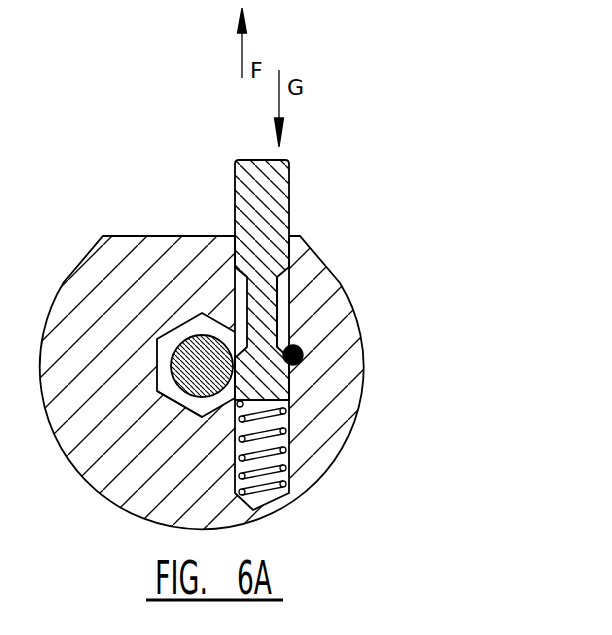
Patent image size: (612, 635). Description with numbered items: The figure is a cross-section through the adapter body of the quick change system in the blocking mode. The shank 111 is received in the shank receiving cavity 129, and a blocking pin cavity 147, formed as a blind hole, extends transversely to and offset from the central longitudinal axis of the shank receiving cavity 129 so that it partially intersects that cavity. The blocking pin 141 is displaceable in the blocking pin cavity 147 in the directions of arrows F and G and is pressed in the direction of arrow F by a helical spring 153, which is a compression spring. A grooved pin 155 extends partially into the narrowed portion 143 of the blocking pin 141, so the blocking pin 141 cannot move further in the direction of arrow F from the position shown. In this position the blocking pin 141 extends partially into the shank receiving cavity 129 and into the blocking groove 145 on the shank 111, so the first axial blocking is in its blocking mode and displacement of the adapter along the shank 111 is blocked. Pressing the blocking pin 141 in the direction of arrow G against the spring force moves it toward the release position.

The blocking pin 141 is at (268, 194).
The blocking pin cavity 147 is at (240, 281).
The narrowed portion 143 is at (288, 285).
The grooved pin 155 is at (300, 348).
The shank receiving cavity 129 is at (178, 336).
The shank 111 is at (187, 366).
The blocking groove 145 is at (172, 393).
The helical spring 153 is at (283, 452).